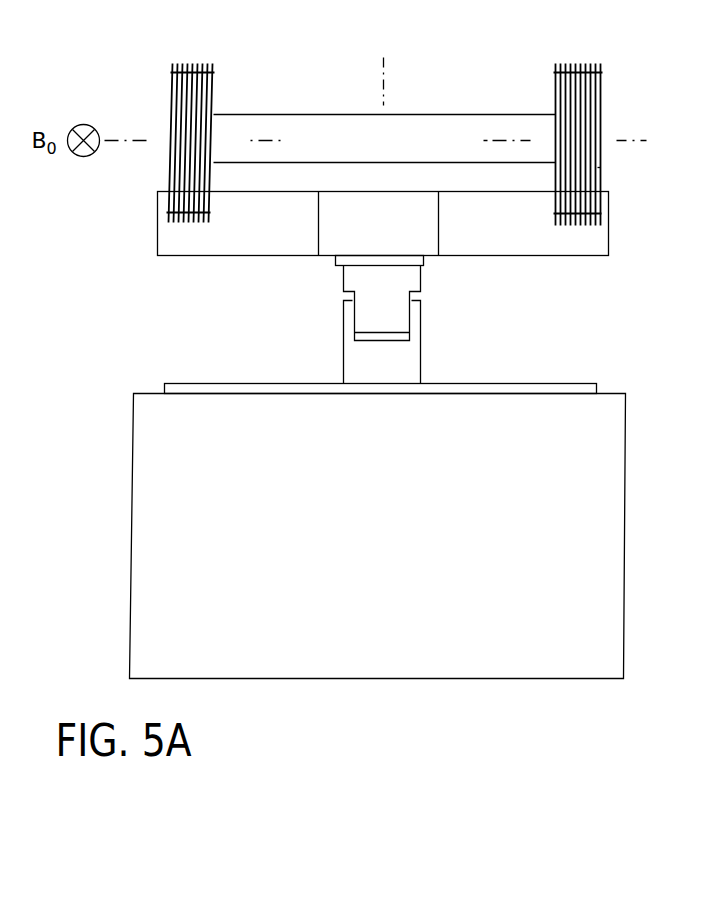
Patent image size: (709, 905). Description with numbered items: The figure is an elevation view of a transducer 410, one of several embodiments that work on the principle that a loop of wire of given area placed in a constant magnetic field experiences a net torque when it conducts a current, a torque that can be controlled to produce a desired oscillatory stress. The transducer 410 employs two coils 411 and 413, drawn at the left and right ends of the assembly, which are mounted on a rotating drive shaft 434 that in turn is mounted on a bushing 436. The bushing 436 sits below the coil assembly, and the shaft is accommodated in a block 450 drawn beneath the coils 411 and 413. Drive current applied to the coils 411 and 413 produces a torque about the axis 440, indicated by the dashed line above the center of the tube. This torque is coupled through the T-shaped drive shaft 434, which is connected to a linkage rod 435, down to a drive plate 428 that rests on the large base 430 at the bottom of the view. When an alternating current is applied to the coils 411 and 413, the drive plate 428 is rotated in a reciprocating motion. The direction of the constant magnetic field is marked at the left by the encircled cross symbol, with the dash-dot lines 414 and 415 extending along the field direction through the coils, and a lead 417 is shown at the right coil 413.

The transducer 410 is at (468, 102).
The coil 411 is at (202, 65).
The coil 413 is at (582, 65).
The magnetic field axis (left) 414 is at (149, 139).
The magnetic field axis (right) 415 is at (647, 140).
The coil end 417 is at (598, 167).
The drive plate 428 is at (460, 385).
The housing block 430 is at (617, 527).
The drive shaft 434 is at (411, 277).
The linkage rod 435 is at (354, 356).
The bushing 436 is at (337, 258).
The axis 440 is at (383, 94).
The coil support block 450 is at (163, 237).